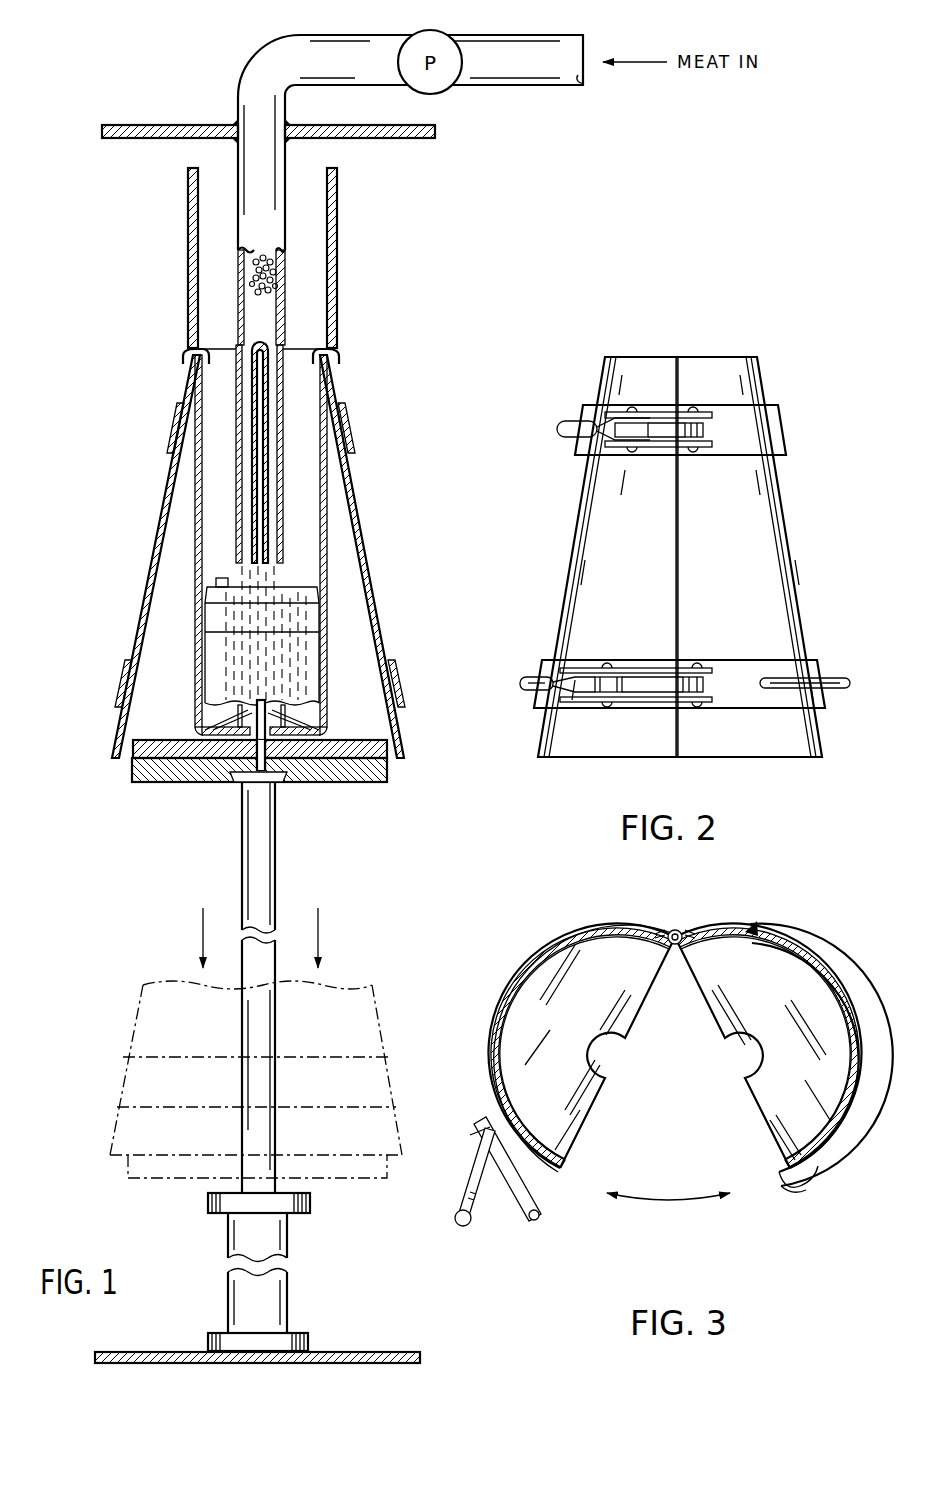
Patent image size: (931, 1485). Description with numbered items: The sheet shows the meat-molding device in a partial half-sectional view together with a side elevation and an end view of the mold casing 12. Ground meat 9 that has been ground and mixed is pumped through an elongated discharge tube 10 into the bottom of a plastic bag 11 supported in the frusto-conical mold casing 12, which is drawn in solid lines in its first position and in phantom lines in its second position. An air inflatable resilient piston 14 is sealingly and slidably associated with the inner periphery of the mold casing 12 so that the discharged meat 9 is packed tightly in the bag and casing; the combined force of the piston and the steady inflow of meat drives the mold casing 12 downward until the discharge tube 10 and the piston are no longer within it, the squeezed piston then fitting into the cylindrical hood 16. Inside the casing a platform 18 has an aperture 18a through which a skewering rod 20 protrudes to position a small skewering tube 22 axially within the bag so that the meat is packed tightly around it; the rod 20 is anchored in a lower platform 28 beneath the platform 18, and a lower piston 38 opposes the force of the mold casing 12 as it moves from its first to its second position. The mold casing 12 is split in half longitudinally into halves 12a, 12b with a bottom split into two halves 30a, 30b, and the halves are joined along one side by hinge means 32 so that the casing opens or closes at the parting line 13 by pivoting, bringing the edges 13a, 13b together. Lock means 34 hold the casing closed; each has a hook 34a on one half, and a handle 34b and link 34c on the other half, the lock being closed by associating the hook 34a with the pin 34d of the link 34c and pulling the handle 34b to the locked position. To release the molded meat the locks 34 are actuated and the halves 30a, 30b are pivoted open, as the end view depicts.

In FIG. 1, the ground meat 9 is at (275, 275).
In FIG. 1, the discharge tube 10 is at (532, 55).
In FIG. 1, the plastic bag 11 is at (323, 555).
In FIG. 1, the mold casing 12 is at (383, 630).
In FIG. 2, the mold casing 12 is at (797, 570).
In FIG. 3, the mold casing 12 is at (857, 1160).
In FIG. 2, the mold casing half 12a is at (590, 527).
In FIG. 2, the mold casing half 12b is at (748, 488).
In FIG. 2, the parting line 13 is at (679, 575).
In FIG. 2, the edge of casing half 13a is at (677, 543).
In FIG. 2, the edge of casing half 13b is at (678, 530).
In FIG. 1, the air inflatable resilient piston 14 is at (243, 643).
In FIG. 1, the cylindrical hood 16 is at (337, 210).
In FIG. 1, the platform 18 is at (367, 737).
In FIG. 1, the aperture 18a is at (280, 747).
In FIG. 1, the skewering rod 20 is at (217, 757).
In FIG. 1, the skewering tube 22 is at (270, 382).
In FIG. 1, the lower platform 28 is at (388, 768).
In FIG. 1, the bottom half 30a is at (162, 757).
In FIG. 3, the bottom half 30a is at (589, 1021).
In FIG. 1, the bottom half 30b is at (333, 757).
In FIG. 3, the bottom half 30b is at (792, 1021).
In FIG. 3, the hinge means 32 is at (677, 930).
In FIG. 2, the lock means 34 is at (607, 714).
In FIG. 2, the hook 34a is at (705, 683).
In FIG. 3, the hook 34a is at (812, 1192).
In FIG. 2, the handle 34b is at (523, 697).
In FIG. 3, the handle 34b is at (458, 1212).
In FIG. 2, the link 34c is at (647, 700).
In FIG. 3, the link 34c is at (520, 1195).
In FIG. 2, the pin 34d is at (703, 680).
In FIG. 3, the pin 34d is at (540, 1215).
In FIG. 1, the lower piston 38 is at (277, 955).